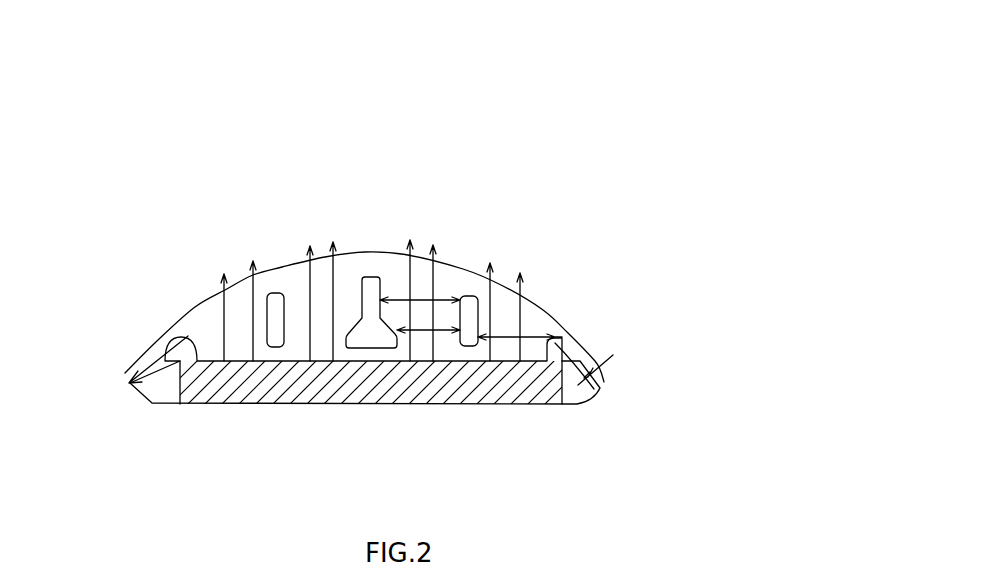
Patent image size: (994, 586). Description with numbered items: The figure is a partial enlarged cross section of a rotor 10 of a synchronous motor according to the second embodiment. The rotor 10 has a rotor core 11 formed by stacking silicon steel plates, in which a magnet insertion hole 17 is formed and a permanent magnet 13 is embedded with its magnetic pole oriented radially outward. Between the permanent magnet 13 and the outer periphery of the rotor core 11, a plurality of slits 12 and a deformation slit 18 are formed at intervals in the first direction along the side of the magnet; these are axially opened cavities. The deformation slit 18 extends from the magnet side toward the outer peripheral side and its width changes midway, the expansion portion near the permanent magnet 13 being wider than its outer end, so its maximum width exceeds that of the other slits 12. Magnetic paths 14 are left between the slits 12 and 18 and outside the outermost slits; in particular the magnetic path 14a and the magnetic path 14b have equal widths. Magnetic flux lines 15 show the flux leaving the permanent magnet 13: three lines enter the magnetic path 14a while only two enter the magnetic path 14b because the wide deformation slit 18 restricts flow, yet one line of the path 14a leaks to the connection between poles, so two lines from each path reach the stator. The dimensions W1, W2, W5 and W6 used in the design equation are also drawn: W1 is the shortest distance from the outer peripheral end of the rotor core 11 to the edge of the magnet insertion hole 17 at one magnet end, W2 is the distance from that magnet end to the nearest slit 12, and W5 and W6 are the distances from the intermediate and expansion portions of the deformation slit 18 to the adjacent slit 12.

The rotor 10 is at (590, 112).
The rotor core 11 is at (208, 309).
The slits 12 is at (272, 296).
The permanent magnet 13 is at (517, 387).
The magnetic paths 14 is at (416, 256).
The magnetic path 14a is at (237, 312).
The magnetic path 14b is at (343, 293).
The magnetic flux lines 15 is at (500, 273).
The magnet insertion hole 17 is at (583, 380).
The deformation slit 18 is at (367, 340).
The shortest distance W1 is at (603, 358).
The distance W2 is at (520, 331).
The distance W5 is at (420, 294).
The distance W6 is at (428, 325).